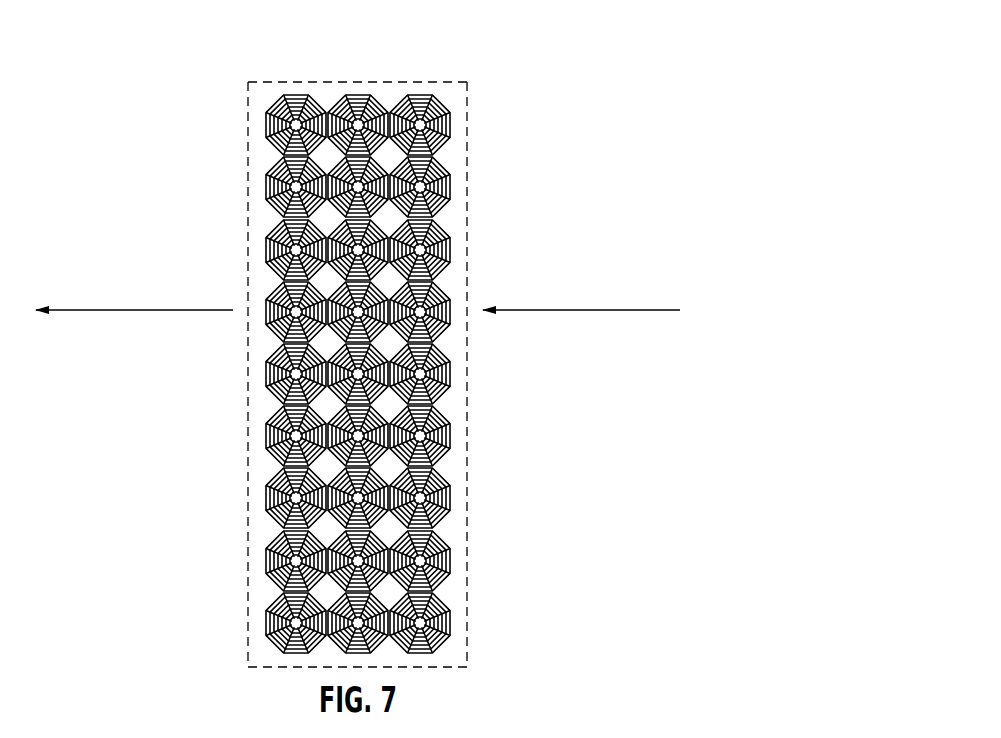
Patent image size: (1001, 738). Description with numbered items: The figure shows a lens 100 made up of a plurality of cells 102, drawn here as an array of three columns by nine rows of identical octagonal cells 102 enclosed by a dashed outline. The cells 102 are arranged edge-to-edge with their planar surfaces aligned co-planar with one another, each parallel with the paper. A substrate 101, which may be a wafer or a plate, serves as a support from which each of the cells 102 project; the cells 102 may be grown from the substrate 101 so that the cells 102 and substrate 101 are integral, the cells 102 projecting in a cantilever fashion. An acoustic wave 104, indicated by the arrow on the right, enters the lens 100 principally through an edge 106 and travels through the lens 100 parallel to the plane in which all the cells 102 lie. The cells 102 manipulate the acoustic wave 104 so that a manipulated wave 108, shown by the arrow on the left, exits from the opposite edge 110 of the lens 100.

The lens 100 is at (299, 88).
The substrate 101 is at (440, 82).
The cell 102 is at (278, 108).
The acoustic wave 104 is at (582, 310).
The edge 106 is at (466, 193).
The manipulated wave 108 is at (135, 310).
The edge 110 is at (248, 397).